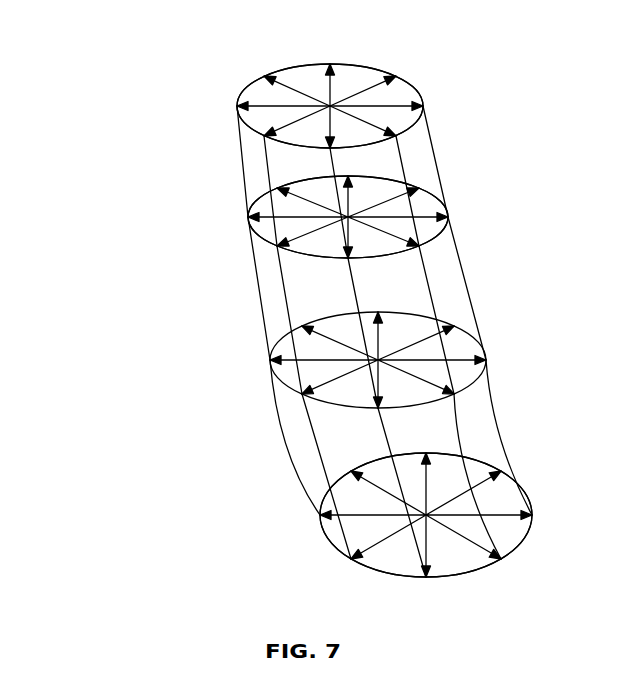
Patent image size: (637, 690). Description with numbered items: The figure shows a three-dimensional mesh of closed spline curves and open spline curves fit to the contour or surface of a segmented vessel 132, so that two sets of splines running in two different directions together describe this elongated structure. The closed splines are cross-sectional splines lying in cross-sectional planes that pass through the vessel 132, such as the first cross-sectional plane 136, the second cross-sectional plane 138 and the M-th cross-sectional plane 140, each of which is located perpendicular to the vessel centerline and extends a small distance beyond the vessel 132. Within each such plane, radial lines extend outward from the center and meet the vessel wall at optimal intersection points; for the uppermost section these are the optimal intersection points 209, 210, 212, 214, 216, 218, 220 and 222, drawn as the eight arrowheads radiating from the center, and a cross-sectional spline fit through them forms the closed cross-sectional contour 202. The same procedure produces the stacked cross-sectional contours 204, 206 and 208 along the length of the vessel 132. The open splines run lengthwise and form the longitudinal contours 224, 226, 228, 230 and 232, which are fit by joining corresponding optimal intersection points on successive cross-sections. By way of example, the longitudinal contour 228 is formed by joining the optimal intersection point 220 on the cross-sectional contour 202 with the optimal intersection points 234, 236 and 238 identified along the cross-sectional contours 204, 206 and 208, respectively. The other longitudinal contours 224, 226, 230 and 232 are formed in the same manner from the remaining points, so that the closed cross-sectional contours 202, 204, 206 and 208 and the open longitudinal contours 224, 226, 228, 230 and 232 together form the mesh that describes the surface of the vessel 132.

The vessel 132 is at (117, 33).
The first cross-sectional plane 136 is at (242, 83).
The second cross-sectional plane 138 is at (232, 220).
The M cross-sectional plane 140 is at (322, 533).
The cross-sectional contour 202 is at (414, 86).
The cross-sectional contour 204 is at (445, 203).
The cross-sectional contour 206 is at (473, 328).
The cross-sectional contour 208 is at (510, 474).
The optimal intersection point 209 is at (236, 107).
The optimal intersection point 210 is at (265, 77).
The optimal intersection point 212 is at (330, 63).
The optimal intersection point 214 is at (396, 76).
The optimal intersection point 216 is at (424, 107).
The optimal intersection point 218 is at (398, 137).
The optimal intersection point 220 is at (331, 148).
The optimal intersection point 222 is at (265, 141).
The longitudinal contour 224 is at (254, 276).
The longitudinal contour 226 is at (291, 300).
The longitudinal contour 228 is at (383, 435).
The longitudinal contour 230 is at (424, 262).
The longitudinal contour 232 is at (450, 229).
The optimal intersection point 234 is at (352, 258).
The optimal intersection point 236 is at (380, 409).
The optimal intersection point 238 is at (427, 578).